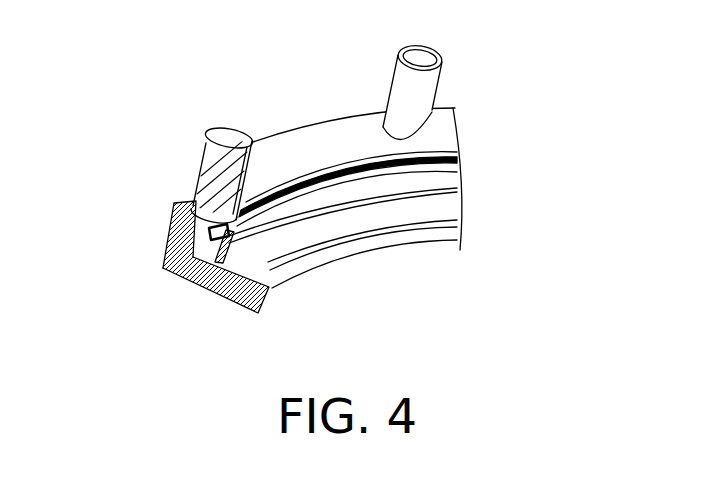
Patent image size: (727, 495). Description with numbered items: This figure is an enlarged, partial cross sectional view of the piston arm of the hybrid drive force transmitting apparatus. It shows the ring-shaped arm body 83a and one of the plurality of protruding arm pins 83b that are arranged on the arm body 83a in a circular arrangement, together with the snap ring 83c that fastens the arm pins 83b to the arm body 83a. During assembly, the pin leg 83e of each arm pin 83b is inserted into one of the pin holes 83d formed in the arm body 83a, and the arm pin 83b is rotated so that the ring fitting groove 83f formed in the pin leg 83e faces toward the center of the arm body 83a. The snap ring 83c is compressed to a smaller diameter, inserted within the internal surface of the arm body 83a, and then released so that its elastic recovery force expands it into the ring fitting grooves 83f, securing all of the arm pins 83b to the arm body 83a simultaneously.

The arm body 83a is at (330, 121).
The arm pin 83b is at (205, 147).
The snap ring 83c is at (228, 240).
The pin hole 83d is at (171, 222).
The pin leg 83e is at (193, 283).
The ring fitting groove 83f is at (210, 227).